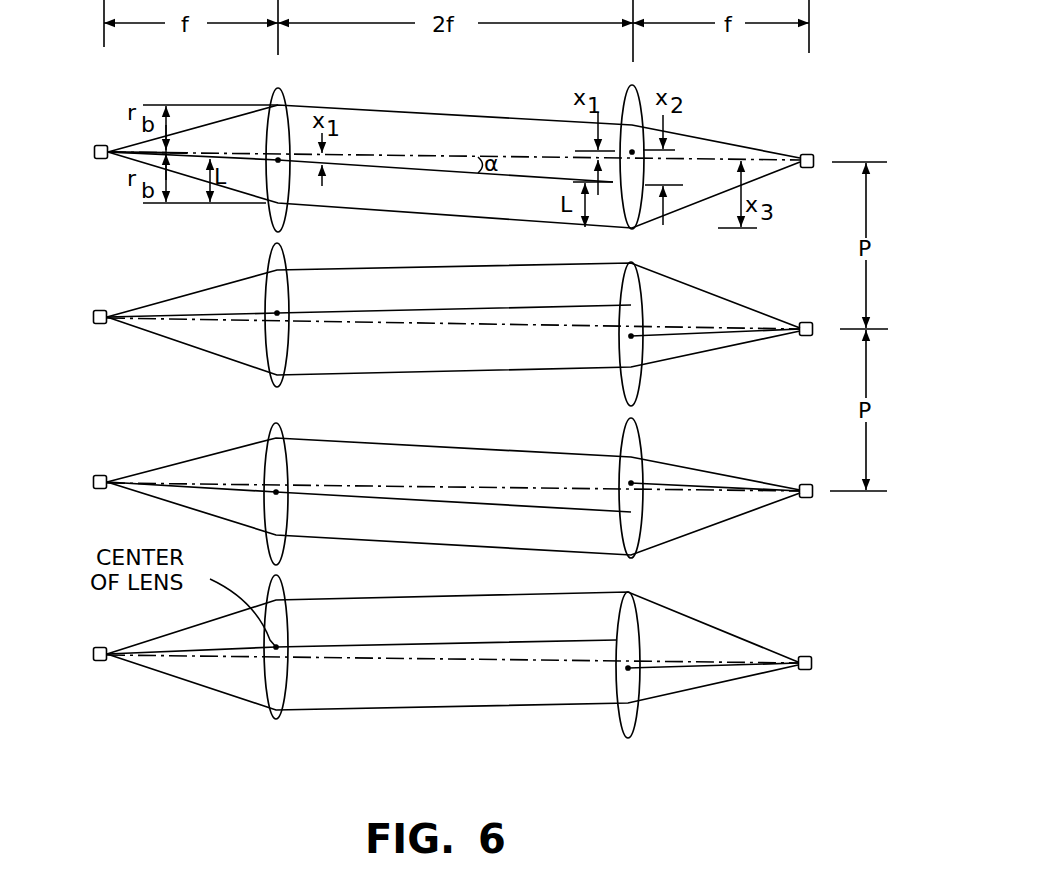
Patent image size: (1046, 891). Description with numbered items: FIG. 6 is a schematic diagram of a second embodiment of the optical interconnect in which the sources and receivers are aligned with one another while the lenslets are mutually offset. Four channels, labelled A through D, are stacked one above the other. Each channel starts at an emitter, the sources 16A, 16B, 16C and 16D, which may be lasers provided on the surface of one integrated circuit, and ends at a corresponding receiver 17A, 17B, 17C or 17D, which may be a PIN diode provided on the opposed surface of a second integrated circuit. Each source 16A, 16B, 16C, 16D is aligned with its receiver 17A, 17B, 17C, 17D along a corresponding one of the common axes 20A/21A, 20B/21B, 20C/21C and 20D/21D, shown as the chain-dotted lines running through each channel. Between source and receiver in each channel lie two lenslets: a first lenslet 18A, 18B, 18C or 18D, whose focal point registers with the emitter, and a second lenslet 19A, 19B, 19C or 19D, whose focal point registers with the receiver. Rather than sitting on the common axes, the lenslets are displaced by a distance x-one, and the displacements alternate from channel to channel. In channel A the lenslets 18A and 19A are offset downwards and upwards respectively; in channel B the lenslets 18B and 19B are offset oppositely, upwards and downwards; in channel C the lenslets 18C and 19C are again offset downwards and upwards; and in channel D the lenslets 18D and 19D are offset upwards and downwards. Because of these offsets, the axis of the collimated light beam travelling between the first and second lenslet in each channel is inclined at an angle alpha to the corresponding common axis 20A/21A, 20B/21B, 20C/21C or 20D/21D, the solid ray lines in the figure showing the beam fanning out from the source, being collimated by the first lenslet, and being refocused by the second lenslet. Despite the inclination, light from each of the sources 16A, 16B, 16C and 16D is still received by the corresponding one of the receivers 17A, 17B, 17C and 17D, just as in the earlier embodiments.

The emitter 16A is at (95, 150).
The emitter 16B is at (95, 314).
The emitter 16C is at (96, 479).
The emitter 16D is at (96, 651).
The receiver 17A is at (815, 155).
The receiver 17B is at (812, 325).
The receiver 17C is at (812, 488).
The receiver 17D is at (815, 660).
The lenslet 18A is at (285, 98).
The lenslet 18B is at (285, 257).
The lenslet 18C is at (285, 433).
The lenslet 18D is at (285, 591).
The lenslet 19A is at (626, 92).
The lenslet 19B is at (622, 292).
The lenslet 19C is at (622, 437).
The lenslet 19D is at (618, 619).
The common axis 20A is at (522, 155).
The common axis 20B is at (465, 326).
The common axis 20C is at (493, 488).
The common axis 20D is at (490, 662).
The common axis 21A is at (522, 155).
The common axis 21B is at (465, 326).
The common axis 21C is at (493, 488).
The common axis 21D is at (490, 662).